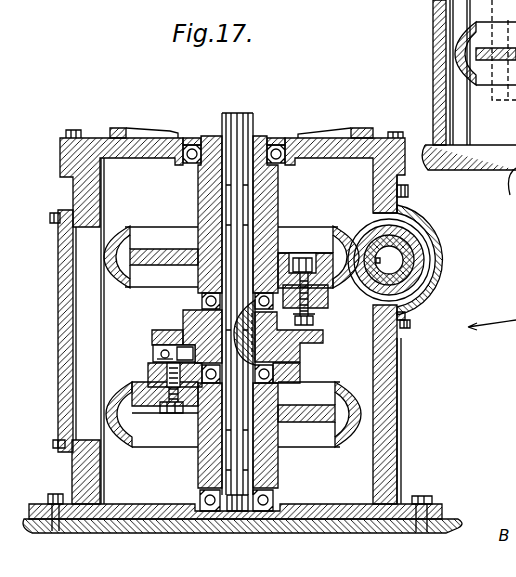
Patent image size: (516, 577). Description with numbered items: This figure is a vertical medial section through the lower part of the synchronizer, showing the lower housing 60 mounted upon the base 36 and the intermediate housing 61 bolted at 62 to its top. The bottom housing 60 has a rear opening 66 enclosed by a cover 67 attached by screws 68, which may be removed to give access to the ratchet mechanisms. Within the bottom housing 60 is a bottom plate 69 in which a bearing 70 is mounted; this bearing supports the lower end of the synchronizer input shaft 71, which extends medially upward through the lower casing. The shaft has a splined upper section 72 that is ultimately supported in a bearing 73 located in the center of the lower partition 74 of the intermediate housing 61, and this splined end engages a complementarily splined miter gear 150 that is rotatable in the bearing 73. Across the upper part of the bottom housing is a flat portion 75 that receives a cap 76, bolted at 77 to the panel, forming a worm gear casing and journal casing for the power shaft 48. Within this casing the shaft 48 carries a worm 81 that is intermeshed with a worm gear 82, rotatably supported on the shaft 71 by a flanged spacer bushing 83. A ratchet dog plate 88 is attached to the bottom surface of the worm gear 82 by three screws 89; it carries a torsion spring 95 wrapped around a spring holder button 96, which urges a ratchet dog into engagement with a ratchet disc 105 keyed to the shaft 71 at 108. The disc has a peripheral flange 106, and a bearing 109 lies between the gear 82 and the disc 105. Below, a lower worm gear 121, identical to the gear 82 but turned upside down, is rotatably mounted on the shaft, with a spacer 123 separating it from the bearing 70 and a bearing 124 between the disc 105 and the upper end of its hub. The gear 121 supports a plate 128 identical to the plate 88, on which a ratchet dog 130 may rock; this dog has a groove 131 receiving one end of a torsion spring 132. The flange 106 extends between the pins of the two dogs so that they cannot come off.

The base 36 is at (450, 523).
The power shaft 48 is at (396, 247).
The lower housing 60 is at (74, 183).
The intermediate housing 61 is at (356, 130).
The bolts 62 is at (78, 129).
The rear opening 66 is at (80, 291).
The cover 67 is at (66, 276).
The screws 68 is at (55, 210).
The bottom plate 69 is at (130, 520).
The bearing 70 is at (251, 533).
The synchronizer input shaft 71 is at (210, 205).
The splined upper section 72 is at (238, 112).
The bearing 73 is at (187, 166).
The lower partition 74 is at (148, 138).
The flat portion 75 is at (378, 195).
The cap 76 is at (436, 219).
The bolts 77 is at (409, 191).
The worm 81 is at (424, 267).
The worm gear 82 is at (120, 247).
The flanged spacer bushing 83 is at (272, 186).
The ratchet dog plate 88 is at (330, 308).
The screws 89 is at (305, 258).
The torsion spring 95 is at (330, 322).
The spring holder button 96 is at (315, 318).
The ratchet disc 105 is at (184, 322).
The peripheral flange 106 is at (325, 337).
The key 108 is at (298, 348).
The bearing 109 is at (205, 298).
The lower worm gear 121 is at (148, 440).
The spacer 123 is at (276, 488).
The bearing 124 is at (276, 373).
The plate 128 is at (150, 372).
The ratchet dog 130 is at (153, 350).
The groove 131 is at (157, 355).
The torsion spring 132 is at (154, 338).
The miter gear 150 is at (260, 137).